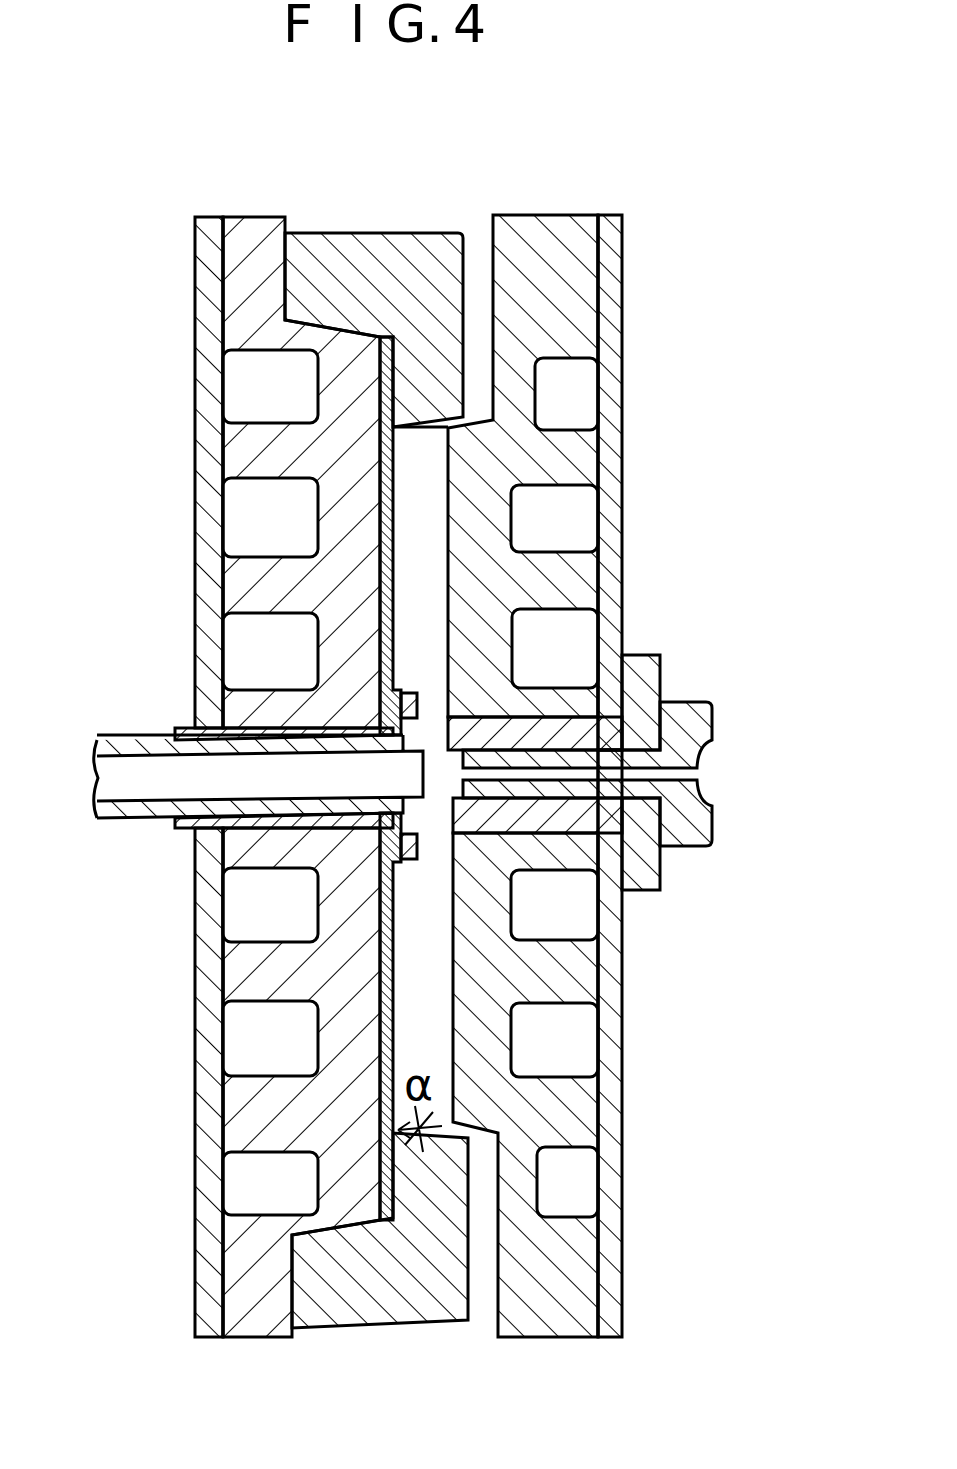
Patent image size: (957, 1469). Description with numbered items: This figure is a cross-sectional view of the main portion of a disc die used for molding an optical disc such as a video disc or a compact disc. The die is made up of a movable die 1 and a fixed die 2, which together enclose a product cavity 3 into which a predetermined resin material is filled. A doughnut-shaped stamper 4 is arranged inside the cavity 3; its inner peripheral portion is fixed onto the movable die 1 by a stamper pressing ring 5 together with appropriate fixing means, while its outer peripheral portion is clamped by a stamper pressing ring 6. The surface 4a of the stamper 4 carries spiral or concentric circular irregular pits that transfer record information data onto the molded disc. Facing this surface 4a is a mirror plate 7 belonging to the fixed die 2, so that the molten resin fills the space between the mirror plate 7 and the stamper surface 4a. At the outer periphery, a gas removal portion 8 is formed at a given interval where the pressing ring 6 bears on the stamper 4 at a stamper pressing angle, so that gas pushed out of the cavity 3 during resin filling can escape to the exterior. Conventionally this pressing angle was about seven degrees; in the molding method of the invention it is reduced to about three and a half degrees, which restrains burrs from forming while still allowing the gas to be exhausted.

The movable die 1 is at (226, 208).
The fixed die 2 is at (598, 208).
The product cavity 3 is at (440, 601).
The stamper 4 is at (390, 440).
The stamper surface 4a is at (400, 905).
The stamper pressing ring 5 is at (407, 688).
The stamper pressing ring 6 is at (370, 258).
The mirror plate 7 is at (560, 295).
The gas removal portion 8 is at (440, 434).